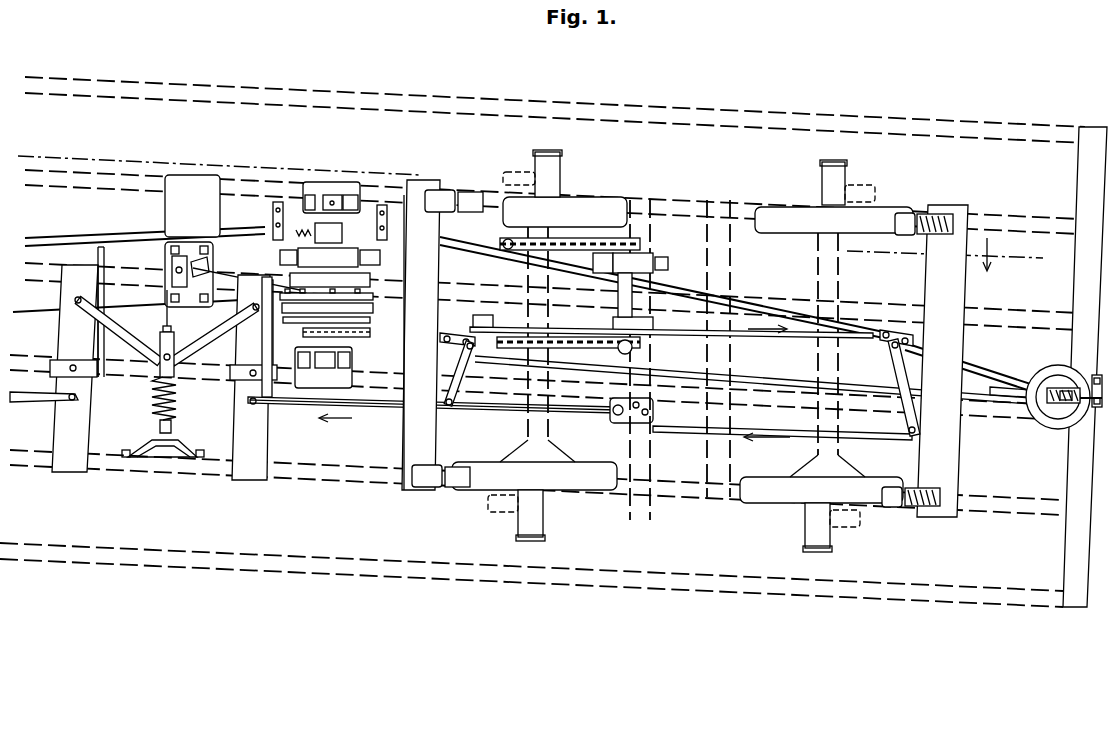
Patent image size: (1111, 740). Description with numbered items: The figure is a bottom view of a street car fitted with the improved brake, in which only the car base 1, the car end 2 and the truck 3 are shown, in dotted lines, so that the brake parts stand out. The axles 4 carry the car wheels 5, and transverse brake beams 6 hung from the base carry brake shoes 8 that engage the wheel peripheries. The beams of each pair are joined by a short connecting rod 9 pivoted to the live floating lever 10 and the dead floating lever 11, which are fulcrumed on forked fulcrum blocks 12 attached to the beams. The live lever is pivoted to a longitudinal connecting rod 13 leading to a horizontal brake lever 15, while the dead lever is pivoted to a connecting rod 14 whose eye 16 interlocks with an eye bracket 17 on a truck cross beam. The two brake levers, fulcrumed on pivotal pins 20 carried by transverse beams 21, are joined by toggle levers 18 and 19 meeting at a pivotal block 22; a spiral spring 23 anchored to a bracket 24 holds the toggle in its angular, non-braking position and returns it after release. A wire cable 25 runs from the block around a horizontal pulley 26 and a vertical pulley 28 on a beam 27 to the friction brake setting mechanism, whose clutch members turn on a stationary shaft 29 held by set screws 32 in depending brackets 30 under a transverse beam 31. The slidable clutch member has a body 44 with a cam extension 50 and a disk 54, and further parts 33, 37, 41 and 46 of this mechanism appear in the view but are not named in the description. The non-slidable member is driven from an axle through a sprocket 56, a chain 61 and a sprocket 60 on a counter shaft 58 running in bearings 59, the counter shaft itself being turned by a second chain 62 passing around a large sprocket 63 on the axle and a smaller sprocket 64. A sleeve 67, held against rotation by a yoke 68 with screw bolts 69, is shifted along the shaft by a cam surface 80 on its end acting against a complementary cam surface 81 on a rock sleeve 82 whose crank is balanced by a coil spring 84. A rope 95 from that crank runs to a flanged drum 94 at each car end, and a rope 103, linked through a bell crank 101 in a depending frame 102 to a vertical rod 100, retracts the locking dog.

The base 1 is at (542, 342).
The car end 2 is at (1085, 367).
The truck 3 is at (680, 360).
The axles 4 is at (681, 351).
The car wheels 5 is at (277, 275).
The transverse brake beams 6 is at (685, 348).
The brake shoes 8 is at (478, 194).
The short connecting rod 9 is at (671, 343).
The live floating lever 10 is at (893, 357).
The dead floating lever 11 is at (475, 356).
The forked fulcrum blocks 12 is at (444, 344).
The longitudinal connecting rod 13 is at (852, 452).
The connecting rod 14 is at (498, 404).
The horizontal brake lever 15 is at (81, 321).
The eye 16 is at (611, 413).
The eye bracket 17 is at (653, 412).
The toggle lever 18 is at (215, 335).
The toggle lever 19 is at (119, 330).
The pivotal pins 20 is at (70, 370).
The transverse beams 21 is at (161, 372).
The pivotal block 22 is at (160, 365).
The spiral spring 23 is at (176, 398).
The bracket 24 is at (163, 440).
The wire cable 25 is at (170, 318).
The horizontal pulley 26 is at (166, 270).
The beam 27 is at (192, 206).
The vertical pulley 28 is at (209, 262).
The stationary shaft 29 is at (336, 193).
The depending brackets 30 is at (352, 198).
The transverse beam 31 is at (338, 377).
The set screws 32 is at (330, 200).
The plate 33 is at (370, 320).
The plate 37 is at (373, 308).
The chain 41 is at (368, 334).
The body 44 is at (405, 300).
The post 46 is at (272, 296).
The cam extension 50 is at (373, 296).
The disk 54 is at (370, 278).
The sprocket 56 is at (284, 330).
The counter shaft 58 is at (618, 285).
The bearings 59 is at (613, 323).
The sprocket 60 is at (622, 353).
The chain 61 is at (568, 357).
The second chain 62 is at (606, 262).
The sprocket 63 is at (508, 249).
The sprocket 64 is at (642, 244).
The sleeve 67 is at (328, 256).
The yoke 68 is at (292, 255).
The screw bolts 69 is at (373, 255).
The cam surface 80 is at (246, 267).
The cam surface 81 is at (374, 220).
The rock sleeve 82 is at (319, 232).
The coil spring 84 is at (290, 219).
The flanged drum 94 is at (1062, 420).
The rope 95 is at (98, 236).
The vertical rod 100 is at (1057, 401).
The bell crank 101 is at (1068, 390).
The depending frame 102 is at (1096, 408).
The rope 103 is at (292, 312).